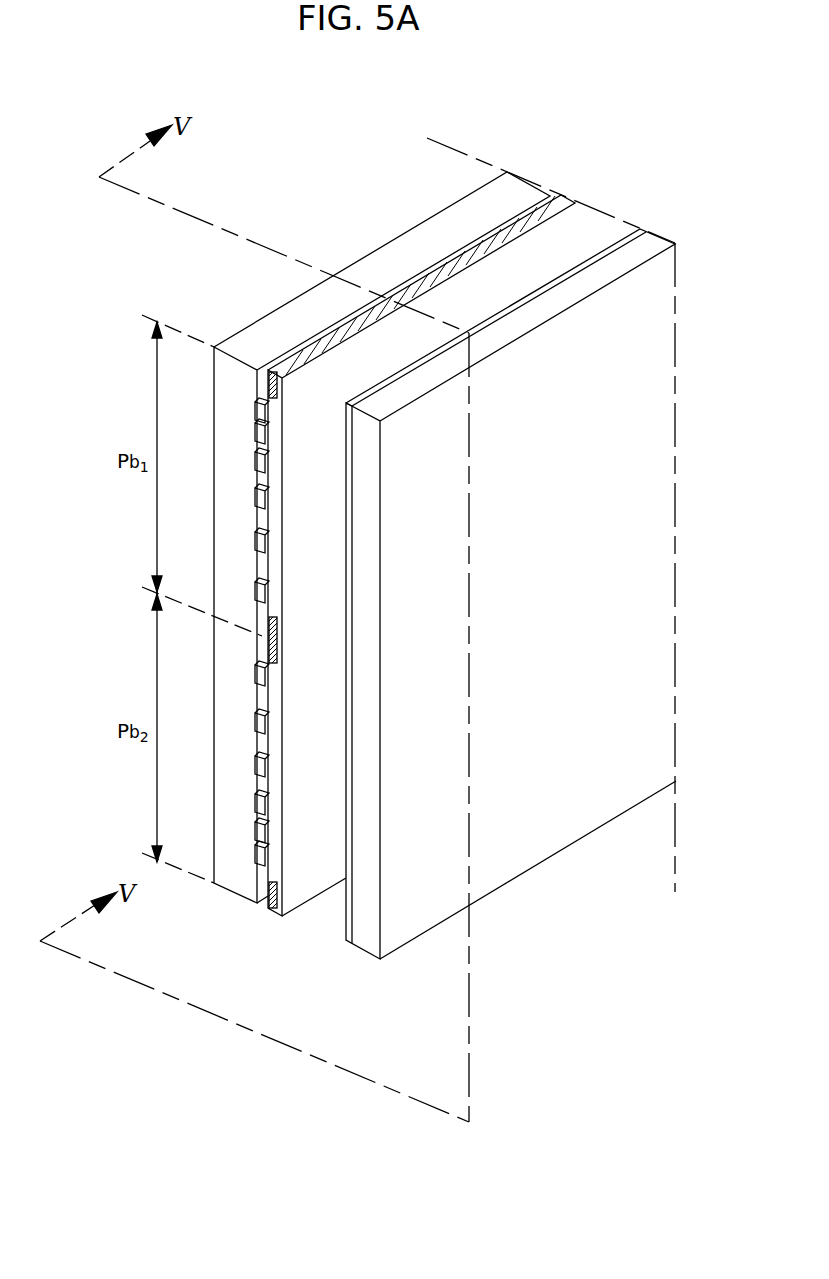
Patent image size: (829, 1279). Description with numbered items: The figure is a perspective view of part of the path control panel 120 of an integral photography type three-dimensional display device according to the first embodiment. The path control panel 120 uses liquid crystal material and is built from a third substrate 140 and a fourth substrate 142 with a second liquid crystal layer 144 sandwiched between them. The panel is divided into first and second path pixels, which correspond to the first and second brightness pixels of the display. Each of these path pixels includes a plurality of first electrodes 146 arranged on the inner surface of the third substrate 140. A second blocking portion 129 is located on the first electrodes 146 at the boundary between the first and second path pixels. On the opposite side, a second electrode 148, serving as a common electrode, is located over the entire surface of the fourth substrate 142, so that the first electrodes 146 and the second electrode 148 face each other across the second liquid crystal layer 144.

The path control panel 120 is at (312, 150).
The third substrate 140 is at (229, 878).
The fourth substrate 142 is at (367, 935).
The second liquid crystal layer 144 is at (277, 912).
The first electrodes 146 is at (257, 437).
The second electrode 148 is at (346, 486).
The second blocking portion 129 is at (270, 653).